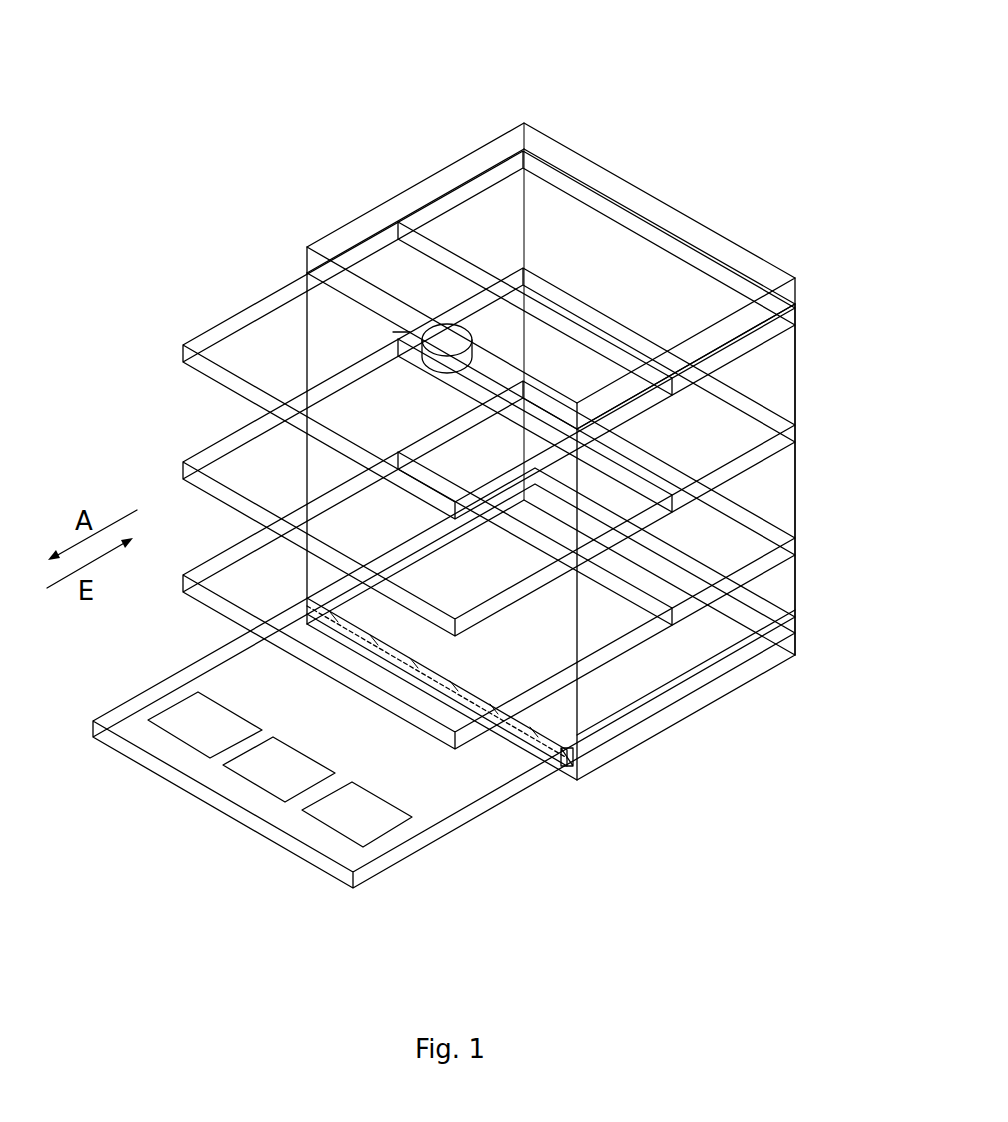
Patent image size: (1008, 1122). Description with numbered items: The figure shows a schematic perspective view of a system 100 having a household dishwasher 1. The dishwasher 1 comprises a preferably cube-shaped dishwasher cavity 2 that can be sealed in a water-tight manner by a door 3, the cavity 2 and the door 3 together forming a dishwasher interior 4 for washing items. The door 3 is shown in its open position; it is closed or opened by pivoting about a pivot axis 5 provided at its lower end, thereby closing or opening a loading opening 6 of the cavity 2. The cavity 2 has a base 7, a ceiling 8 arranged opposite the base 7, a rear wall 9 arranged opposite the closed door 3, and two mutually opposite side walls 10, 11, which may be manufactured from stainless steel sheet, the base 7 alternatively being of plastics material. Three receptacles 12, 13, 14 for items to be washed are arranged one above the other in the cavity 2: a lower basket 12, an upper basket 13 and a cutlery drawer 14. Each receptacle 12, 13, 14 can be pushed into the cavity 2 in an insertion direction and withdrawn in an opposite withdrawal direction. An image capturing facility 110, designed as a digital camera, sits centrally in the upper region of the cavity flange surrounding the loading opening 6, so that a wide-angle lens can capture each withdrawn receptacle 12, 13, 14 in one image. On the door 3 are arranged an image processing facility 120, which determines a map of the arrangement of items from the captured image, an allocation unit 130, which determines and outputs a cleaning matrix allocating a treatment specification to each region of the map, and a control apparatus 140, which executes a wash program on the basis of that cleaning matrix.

The sensor system 100 is at (202, 95).
The dishwasher 1 is at (340, 221).
The dishwasher cavity 2 is at (415, 188).
The door 3 is at (160, 702).
The dishwasher interior 4 is at (547, 508).
The pivot axis 5 is at (590, 775).
The loading opening 6 is at (556, 708).
The base 7 is at (678, 665).
The ceiling 8 is at (578, 173).
The rear wall 9 is at (695, 238).
The side wall 10 is at (437, 197).
The side wall 11 is at (764, 398).
The receptacle for items to be washed 12 is at (213, 577).
The receptacle for items to be washed 13 is at (213, 463).
The receptacle for items to be washed 14 is at (255, 310).
The image capturing facility 110 is at (452, 332).
The image processing facility 120 is at (180, 742).
The allocation unit 130 is at (253, 785).
The control apparatus 140 is at (327, 832).